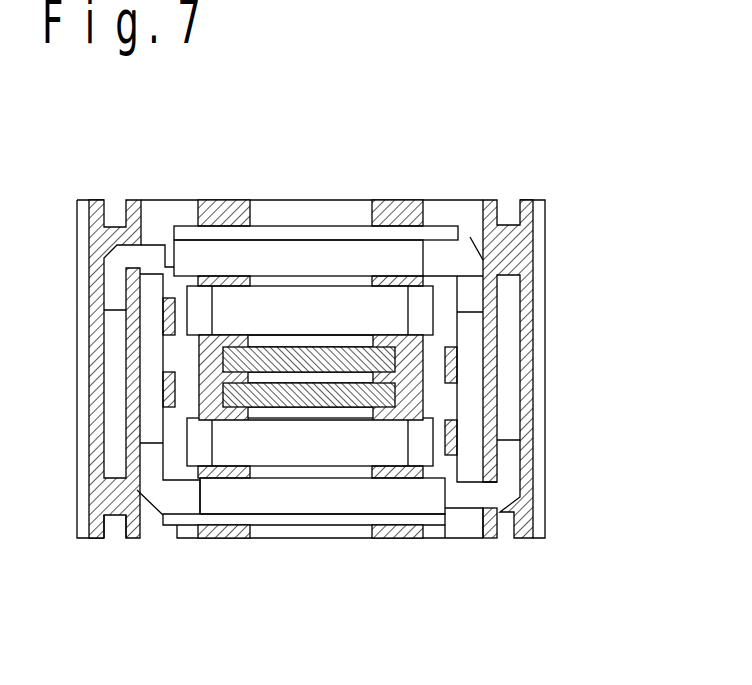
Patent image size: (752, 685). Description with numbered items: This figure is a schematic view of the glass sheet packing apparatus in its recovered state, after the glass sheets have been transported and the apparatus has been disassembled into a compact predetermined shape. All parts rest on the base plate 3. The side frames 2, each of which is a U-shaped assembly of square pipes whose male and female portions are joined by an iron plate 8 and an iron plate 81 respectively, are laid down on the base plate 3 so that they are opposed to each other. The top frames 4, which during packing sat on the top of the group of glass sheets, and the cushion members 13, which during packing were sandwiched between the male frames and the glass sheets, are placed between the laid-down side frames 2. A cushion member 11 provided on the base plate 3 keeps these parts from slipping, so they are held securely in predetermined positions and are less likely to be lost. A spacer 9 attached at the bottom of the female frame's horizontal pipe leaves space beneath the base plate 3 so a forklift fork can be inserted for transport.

The side frame 2 is at (280, 245).
The base plate 3 is at (455, 525).
The top frame 4 is at (303, 448).
The iron plate 8 is at (120, 257).
The spacer 9 is at (178, 527).
The cushion member 11 is at (113, 517).
The cushion member 13 is at (306, 360).
The iron plate 81 is at (470, 237).